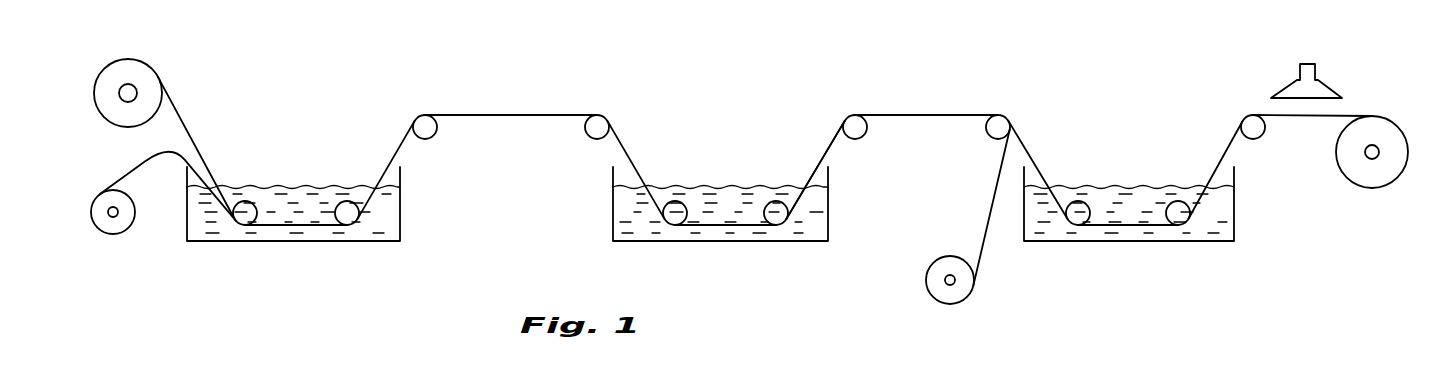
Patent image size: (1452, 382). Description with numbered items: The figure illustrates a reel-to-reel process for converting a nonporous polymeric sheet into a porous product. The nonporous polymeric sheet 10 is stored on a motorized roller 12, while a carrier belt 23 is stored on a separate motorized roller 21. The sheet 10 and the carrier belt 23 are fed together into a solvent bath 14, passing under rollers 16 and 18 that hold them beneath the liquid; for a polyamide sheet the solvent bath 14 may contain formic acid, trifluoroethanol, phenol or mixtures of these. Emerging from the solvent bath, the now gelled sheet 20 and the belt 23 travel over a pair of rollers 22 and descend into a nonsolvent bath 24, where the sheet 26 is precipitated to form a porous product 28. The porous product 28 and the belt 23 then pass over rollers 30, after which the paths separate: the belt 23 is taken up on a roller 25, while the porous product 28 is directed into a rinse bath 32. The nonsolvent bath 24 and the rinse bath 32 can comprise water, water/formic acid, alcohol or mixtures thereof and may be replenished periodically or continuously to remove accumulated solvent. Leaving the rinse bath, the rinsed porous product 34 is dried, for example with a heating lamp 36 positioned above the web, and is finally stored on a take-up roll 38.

The nonporous polymeric sheet 10 is at (184, 127).
The motorized roller 12 is at (147, 78).
The solvent bath 14 is at (300, 203).
The roller 16 is at (247, 215).
The roller 18 is at (349, 215).
The gelled sheet 20 is at (402, 141).
The motorized roller 21 is at (103, 233).
The rollers 22 is at (433, 127).
The carrier belt 23 is at (143, 162).
The nonsolvent bath 24 is at (715, 200).
The roller 25 is at (960, 297).
The sheet 26 is at (728, 227).
The porous product 28 is at (823, 158).
The rollers 30 is at (848, 122).
The rinse bath 32 is at (1118, 200).
The rinsed porous product 34 is at (1223, 155).
The heating lamp 36 is at (1328, 83).
The take-up roll 38 is at (1397, 142).